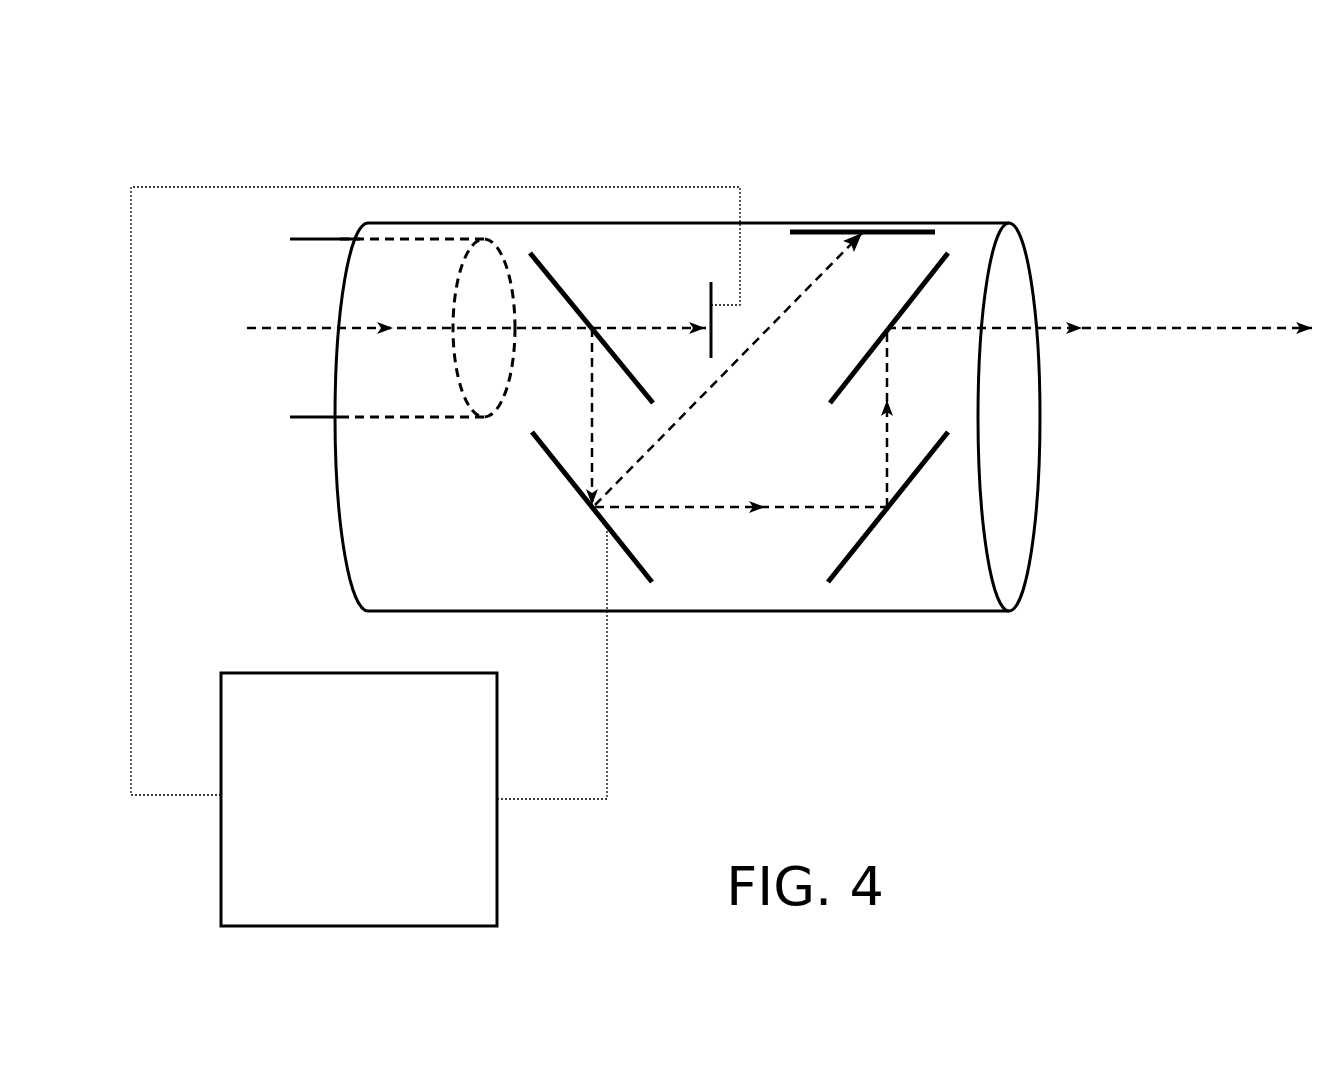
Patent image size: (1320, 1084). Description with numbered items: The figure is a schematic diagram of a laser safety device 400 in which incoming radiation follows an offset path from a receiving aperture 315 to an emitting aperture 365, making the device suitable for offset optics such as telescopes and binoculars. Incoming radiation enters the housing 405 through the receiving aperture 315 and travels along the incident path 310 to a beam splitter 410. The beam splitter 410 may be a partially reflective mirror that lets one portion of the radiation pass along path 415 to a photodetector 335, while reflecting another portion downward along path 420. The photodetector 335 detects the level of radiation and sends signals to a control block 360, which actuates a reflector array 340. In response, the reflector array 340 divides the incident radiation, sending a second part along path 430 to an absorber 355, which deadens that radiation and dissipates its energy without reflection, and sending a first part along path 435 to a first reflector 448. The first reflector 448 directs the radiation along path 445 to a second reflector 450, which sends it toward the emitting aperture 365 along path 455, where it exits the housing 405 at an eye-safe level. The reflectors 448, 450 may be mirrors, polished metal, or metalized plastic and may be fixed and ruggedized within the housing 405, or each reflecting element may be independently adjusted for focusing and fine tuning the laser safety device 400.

The laser safety device 400 is at (1125, 108).
The housing 405 is at (988, 222).
The incident path 310 is at (287, 328).
The receiving aperture 315 is at (330, 237).
The photodetector 335 is at (712, 328).
The reflector array 340 is at (567, 480).
The absorber 355 is at (842, 232).
The control block 360 is at (245, 892).
The emitting aperture 365 is at (1003, 522).
The beam splitter 410 is at (550, 272).
The path 415 is at (645, 328).
The path 420 is at (597, 418).
The path 430 is at (698, 400).
The path 435 is at (788, 512).
The path 445 is at (893, 352).
The first reflector 448 is at (898, 498).
The second reflector 450 is at (918, 297).
The path 455 is at (1170, 330).